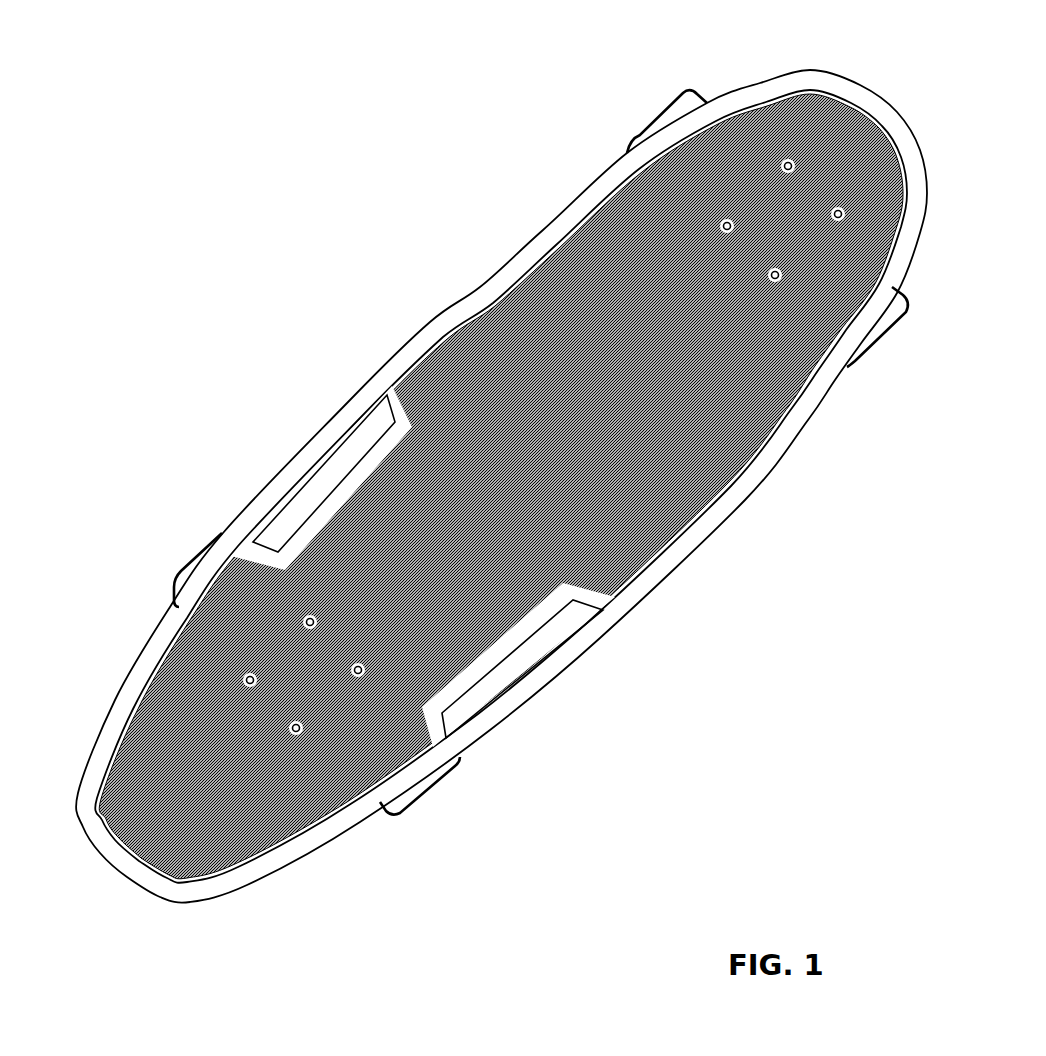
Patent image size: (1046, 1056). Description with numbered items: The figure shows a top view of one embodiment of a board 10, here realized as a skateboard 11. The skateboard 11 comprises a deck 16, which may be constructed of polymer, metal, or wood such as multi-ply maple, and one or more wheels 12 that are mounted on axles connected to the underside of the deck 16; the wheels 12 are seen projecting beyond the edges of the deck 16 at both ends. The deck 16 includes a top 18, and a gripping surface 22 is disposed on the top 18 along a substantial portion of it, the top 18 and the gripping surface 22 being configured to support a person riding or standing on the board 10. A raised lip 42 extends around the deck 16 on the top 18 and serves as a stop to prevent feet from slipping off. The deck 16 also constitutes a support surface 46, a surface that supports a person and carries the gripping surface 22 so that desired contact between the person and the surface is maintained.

The board 10 is at (146, 66).
The skateboard 11 is at (565, 270).
The wheel 12 is at (658, 110).
The deck 16 is at (446, 348).
The top 18 is at (745, 441).
The gripping surface 22 is at (620, 580).
The raised lip 42 is at (334, 814).
The support surface 46 is at (514, 356).